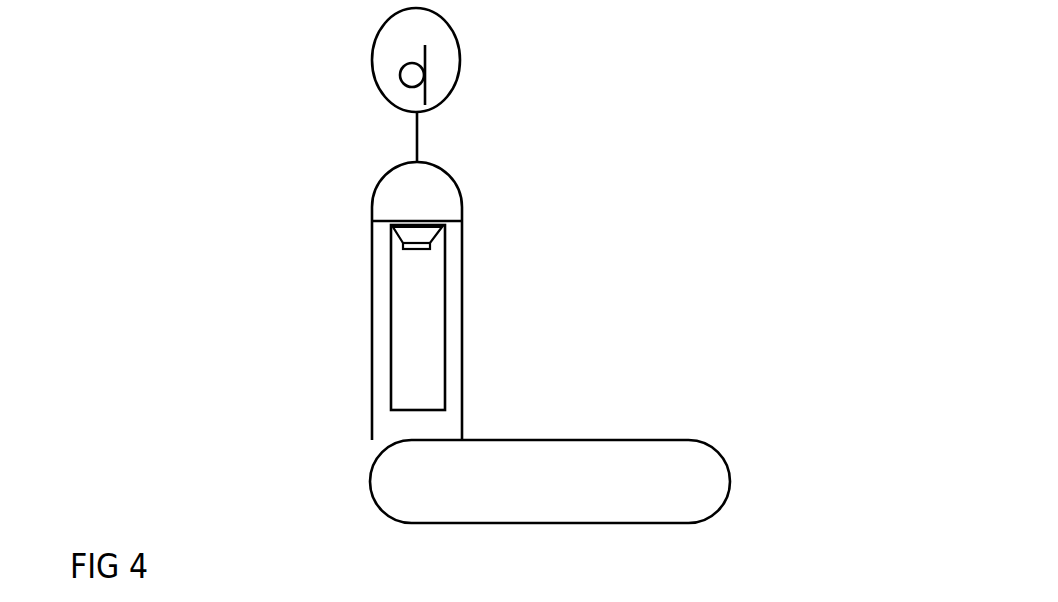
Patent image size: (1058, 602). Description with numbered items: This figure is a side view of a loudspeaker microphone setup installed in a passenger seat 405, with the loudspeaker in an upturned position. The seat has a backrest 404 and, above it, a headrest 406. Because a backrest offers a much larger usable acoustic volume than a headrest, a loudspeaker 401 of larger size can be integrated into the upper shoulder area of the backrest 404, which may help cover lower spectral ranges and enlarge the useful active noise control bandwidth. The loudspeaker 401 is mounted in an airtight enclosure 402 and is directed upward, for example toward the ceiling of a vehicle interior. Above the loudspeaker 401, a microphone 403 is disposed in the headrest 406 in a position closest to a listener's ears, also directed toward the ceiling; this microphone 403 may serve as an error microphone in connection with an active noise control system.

The loudspeaker 401 is at (437, 238).
The enclosure 402 is at (390, 275).
The microphone 403 is at (427, 77).
The backrest 404 is at (383, 427).
The passenger seat 405 is at (600, 430).
The headrest 406 is at (460, 60).